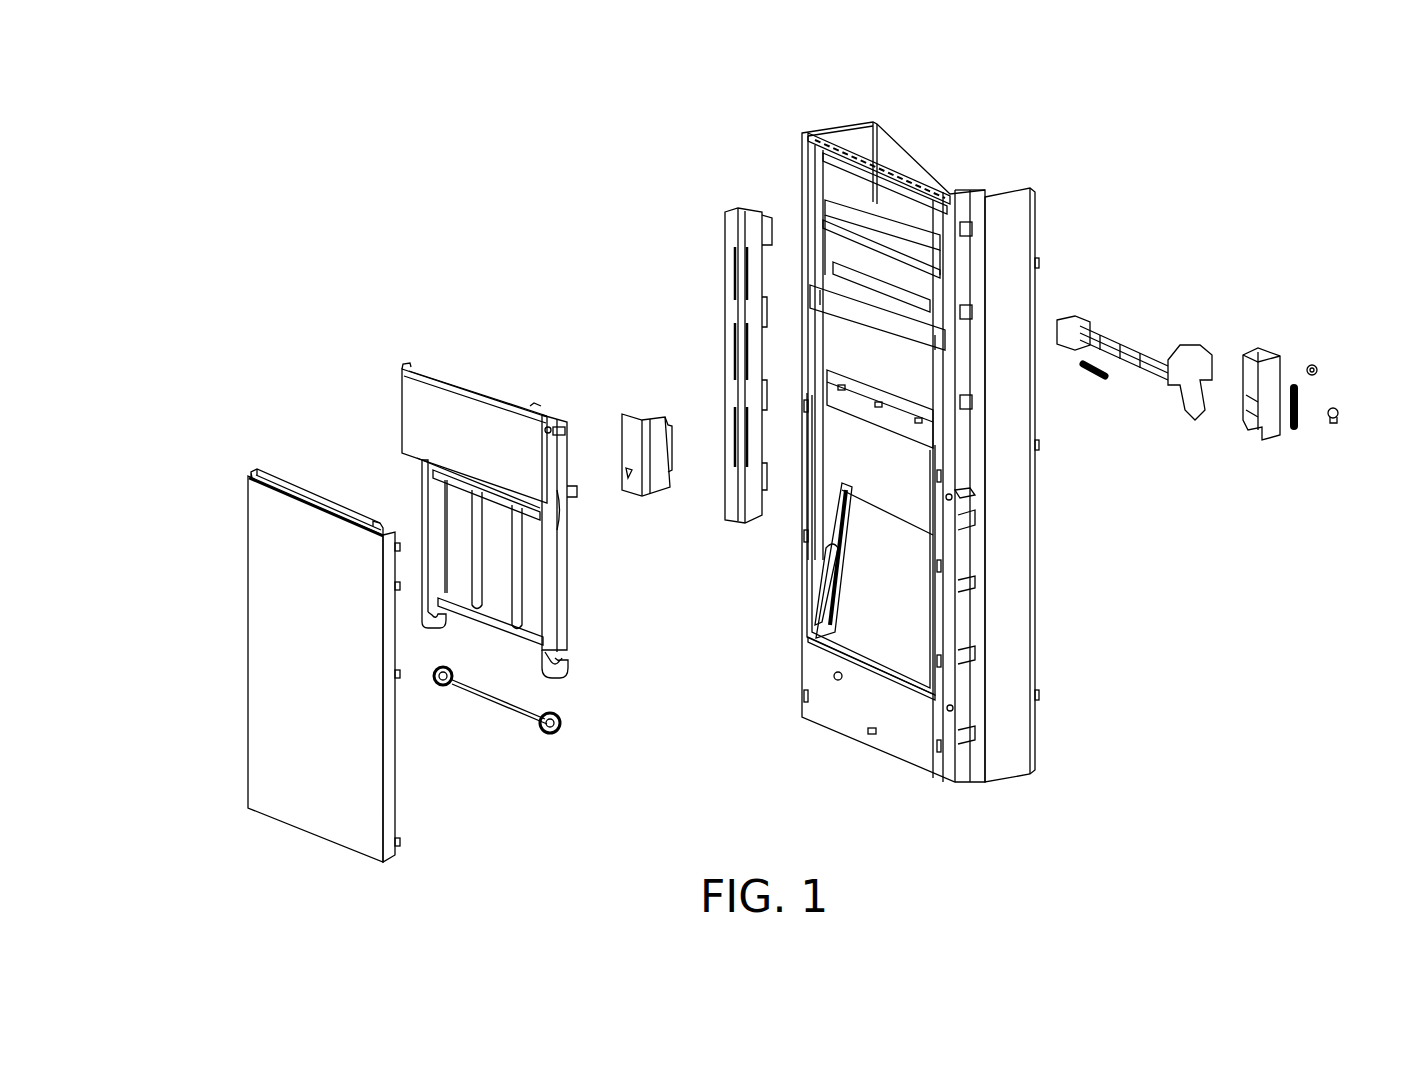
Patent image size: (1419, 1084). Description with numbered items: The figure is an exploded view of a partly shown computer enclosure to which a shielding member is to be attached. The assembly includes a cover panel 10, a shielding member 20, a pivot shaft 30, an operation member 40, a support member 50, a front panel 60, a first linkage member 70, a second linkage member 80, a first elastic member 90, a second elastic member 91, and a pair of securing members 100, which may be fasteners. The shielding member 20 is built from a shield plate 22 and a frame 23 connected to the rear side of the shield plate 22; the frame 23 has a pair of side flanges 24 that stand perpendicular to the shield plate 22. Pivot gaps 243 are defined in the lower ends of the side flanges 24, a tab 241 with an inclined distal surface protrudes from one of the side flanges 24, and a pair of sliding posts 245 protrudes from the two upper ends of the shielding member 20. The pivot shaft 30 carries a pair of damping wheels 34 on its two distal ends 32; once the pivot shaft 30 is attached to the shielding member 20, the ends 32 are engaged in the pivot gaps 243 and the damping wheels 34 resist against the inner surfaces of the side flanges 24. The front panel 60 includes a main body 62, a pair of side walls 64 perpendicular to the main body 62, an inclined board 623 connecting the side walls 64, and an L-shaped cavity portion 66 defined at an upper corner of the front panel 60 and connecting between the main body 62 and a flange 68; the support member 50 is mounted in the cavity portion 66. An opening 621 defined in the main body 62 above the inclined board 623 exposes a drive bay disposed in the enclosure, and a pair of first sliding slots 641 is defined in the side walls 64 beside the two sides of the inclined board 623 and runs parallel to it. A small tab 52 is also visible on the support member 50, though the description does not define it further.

The cover panel 10 is at (272, 588).
The shielding member 20 is at (487, 502).
The shield plate 22 is at (421, 412).
The frame 23 is at (547, 427).
The side flanges 24 is at (558, 566).
The tab 241 is at (577, 492).
The pivot gaps 243 is at (580, 665).
The sliding posts 245 is at (558, 428).
The pivot shaft 30 is at (542, 728).
The distal ends 32 is at (566, 731).
The damping wheels 34 is at (560, 714).
The operation member 40 is at (648, 405).
The support member 50 is at (715, 342).
The tab 52 is at (772, 240).
The front panel 60 is at (916, 447).
The main body 62 is at (845, 690).
The opening 621 is at (920, 375).
The inclined board 623 is at (865, 612).
The side walls 64 is at (785, 560).
The first sliding slots 641 is at (830, 555).
The cavity portion 66 is at (975, 196).
The flange 68 is at (1015, 232).
The first linkage member 70 is at (1120, 340).
The second linkage member 80 is at (1263, 360).
The first elastic member 90 is at (1090, 380).
The second elastic member 91 is at (1297, 430).
The securing members 100 is at (1316, 368).